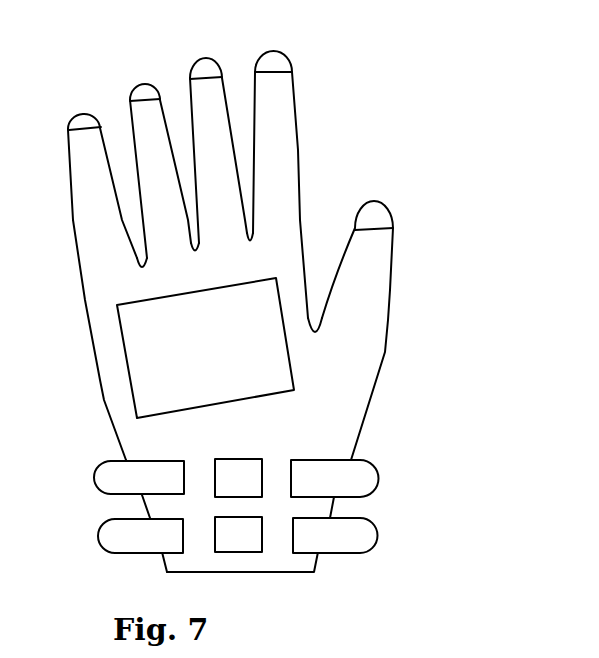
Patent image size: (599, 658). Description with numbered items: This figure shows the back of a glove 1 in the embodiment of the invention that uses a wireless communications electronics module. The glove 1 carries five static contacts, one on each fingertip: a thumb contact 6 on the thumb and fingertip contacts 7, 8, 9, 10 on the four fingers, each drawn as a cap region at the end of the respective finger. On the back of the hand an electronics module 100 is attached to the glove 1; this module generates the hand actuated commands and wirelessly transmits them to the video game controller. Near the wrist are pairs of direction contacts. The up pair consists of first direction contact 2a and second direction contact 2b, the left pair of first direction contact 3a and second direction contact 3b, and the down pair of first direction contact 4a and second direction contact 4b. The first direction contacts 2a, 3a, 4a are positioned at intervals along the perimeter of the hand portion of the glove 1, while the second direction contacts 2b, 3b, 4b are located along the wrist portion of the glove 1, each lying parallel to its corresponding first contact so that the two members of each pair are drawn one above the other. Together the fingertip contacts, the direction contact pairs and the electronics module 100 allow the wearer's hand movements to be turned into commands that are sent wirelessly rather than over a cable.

The glove 1 is at (385, 352).
The thumb contact 6 is at (378, 208).
The fingertip contact 7 is at (275, 60).
The fingertip contact 8 is at (205, 64).
The fingertip contact 9 is at (142, 88).
The fingertip contact 10 is at (79, 120).
The electronics module 100 is at (205, 348).
The first direction contact 2a is at (378, 477).
The second direction contact 2b is at (378, 536).
The first direction contact 3a is at (262, 457).
The second direction contact 3b is at (238, 553).
The first direction contact 4a is at (93, 475).
The second direction contact 4b is at (97, 538).